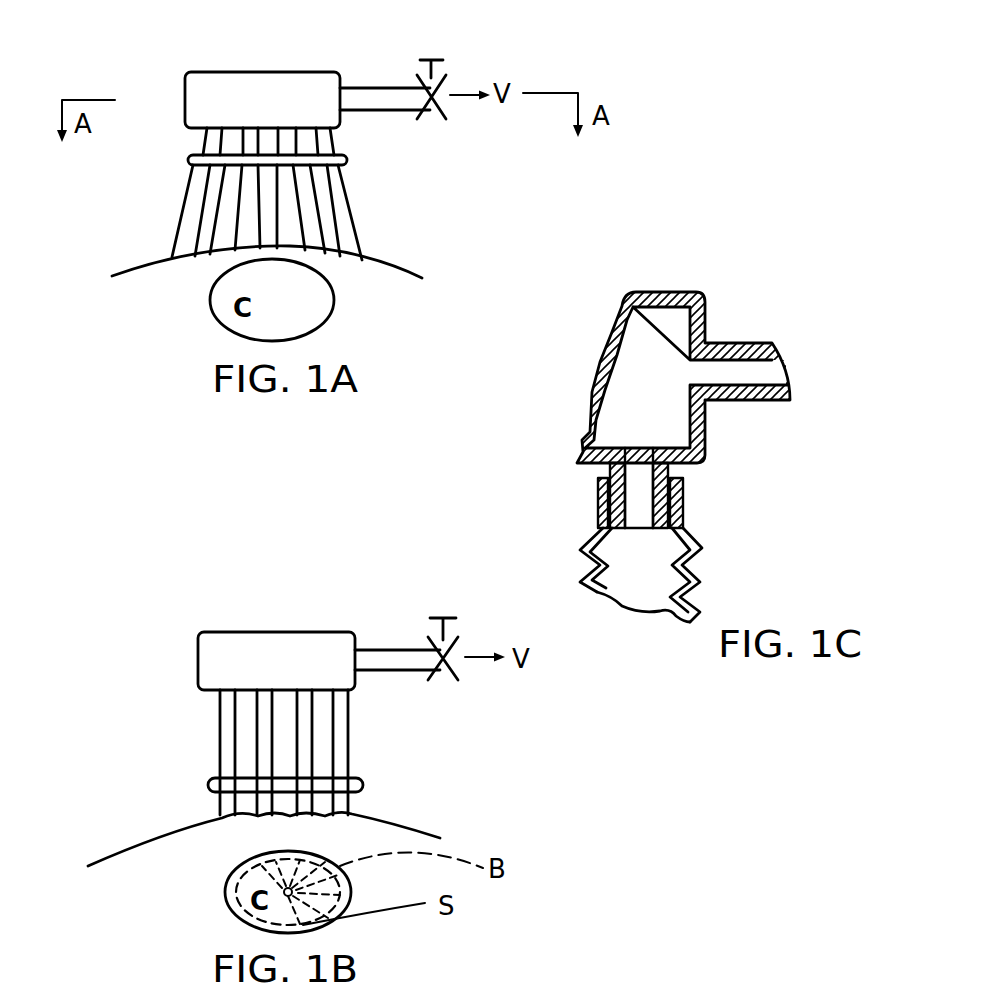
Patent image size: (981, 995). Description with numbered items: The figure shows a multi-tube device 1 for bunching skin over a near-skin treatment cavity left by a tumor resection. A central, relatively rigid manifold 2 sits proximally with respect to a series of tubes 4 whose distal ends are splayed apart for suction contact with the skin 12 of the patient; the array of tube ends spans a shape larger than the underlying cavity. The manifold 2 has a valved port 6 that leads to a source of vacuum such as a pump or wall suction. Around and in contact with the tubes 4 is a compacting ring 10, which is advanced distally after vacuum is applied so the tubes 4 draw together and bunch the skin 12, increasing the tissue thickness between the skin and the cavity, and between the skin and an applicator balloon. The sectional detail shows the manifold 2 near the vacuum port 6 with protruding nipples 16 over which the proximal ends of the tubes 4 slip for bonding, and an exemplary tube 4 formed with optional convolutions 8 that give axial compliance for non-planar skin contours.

In FIG. 1A, the device 1 is at (281, 132).
In FIG. 1B, the device 1 is at (305, 690).
In FIG. 1C, the device 1 is at (653, 429).
In FIG. 1A, the manifold 2 is at (232, 72).
In FIG. 1B, the manifold 2 is at (245, 632).
In FIG. 1C, the manifold 2 is at (655, 292).
In FIG. 1A, the tubes 4 is at (329, 246).
In FIG. 1B, the tubes 4 is at (222, 750).
In FIG. 1C, the tubes 4 is at (683, 495).
In FIG. 1A, the port 6 is at (389, 87).
In FIG. 1C, the port 6 is at (738, 343).
In FIG. 1C, the convolutions 8 is at (693, 582).
In FIG. 1A, the compacting ring 10 is at (196, 168).
In FIG. 1B, the compacting ring 10 is at (362, 778).
In FIG. 1A, the skin 12 is at (385, 258).
In FIG. 1B, the skin 12 is at (405, 822).
In FIG. 1C, the nipples 16 is at (622, 491).